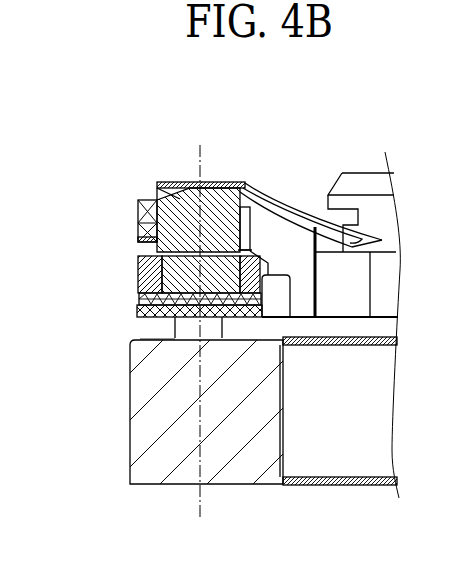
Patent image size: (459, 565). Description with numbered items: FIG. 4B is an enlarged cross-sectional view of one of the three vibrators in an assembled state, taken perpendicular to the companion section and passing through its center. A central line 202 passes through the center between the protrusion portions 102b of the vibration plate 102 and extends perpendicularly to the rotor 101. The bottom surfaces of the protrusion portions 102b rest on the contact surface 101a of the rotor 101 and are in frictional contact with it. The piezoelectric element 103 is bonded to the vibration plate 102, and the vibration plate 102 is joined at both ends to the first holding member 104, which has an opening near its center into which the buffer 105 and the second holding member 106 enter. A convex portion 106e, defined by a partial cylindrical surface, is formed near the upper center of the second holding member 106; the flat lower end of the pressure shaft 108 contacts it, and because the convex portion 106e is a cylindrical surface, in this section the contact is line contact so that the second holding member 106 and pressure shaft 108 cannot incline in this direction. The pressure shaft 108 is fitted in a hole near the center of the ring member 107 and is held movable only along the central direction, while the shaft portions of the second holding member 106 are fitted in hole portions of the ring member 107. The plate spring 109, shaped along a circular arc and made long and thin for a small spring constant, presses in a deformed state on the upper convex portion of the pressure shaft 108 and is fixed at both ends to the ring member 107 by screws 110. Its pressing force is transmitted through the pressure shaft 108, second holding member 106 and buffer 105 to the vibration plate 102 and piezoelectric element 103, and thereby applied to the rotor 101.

The rotor 101 is at (153, 485).
The contact surface 101a is at (248, 342).
The vibration plate 102 is at (137, 312).
The protrusion portion 102b is at (176, 338).
The piezoelectric element 103 is at (139, 299).
The first holding member 104 is at (138, 279).
The buffer 105 is at (153, 338).
The second holding member 106 is at (145, 254).
The convex portion 106e is at (138, 222).
The ring member 107 is at (138, 202).
The pressure shaft 108 is at (171, 182).
The plate spring 109 is at (236, 182).
The screw 110 is at (327, 200).
The central line 202 is at (204, 503).